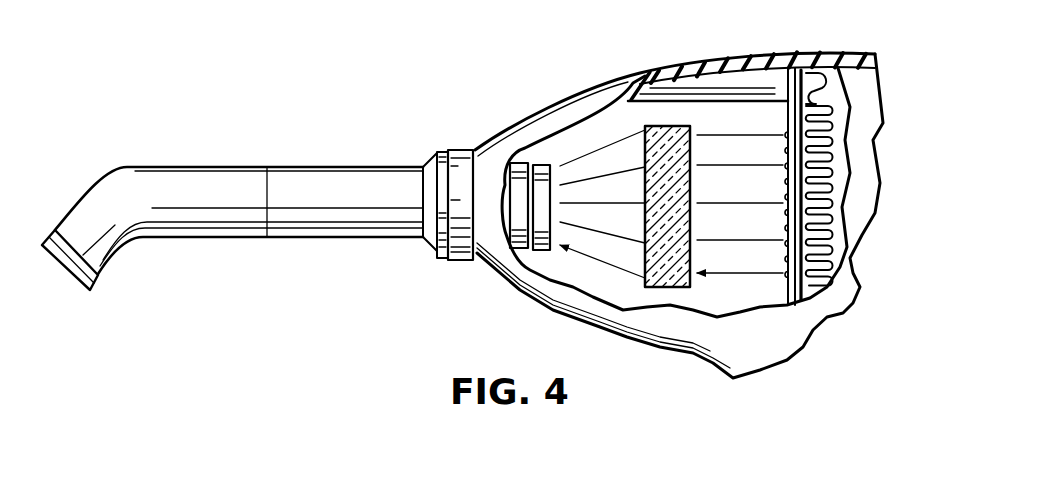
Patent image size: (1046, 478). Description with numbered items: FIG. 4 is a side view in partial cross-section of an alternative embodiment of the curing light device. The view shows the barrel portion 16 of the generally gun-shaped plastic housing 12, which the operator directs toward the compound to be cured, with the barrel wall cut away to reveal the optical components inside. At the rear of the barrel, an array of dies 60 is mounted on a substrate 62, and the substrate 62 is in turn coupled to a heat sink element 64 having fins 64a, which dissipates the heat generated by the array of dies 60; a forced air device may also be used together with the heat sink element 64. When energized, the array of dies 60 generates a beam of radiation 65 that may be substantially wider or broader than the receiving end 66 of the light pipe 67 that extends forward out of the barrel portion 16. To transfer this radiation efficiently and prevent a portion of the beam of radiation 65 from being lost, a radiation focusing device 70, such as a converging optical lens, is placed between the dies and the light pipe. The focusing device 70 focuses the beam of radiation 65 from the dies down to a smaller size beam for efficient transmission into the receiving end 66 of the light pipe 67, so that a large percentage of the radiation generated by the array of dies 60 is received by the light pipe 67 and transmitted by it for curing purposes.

The housing 12 is at (704, 362).
The barrel portion 16 is at (650, 70).
The array of dies 60 is at (783, 230).
The substrate 62 is at (790, 292).
The heat sink element 64 is at (873, 185).
The fins 64a is at (836, 182).
The beam of radiation 65 is at (755, 128).
The receiving end 66 is at (537, 163).
The light pipe 67 is at (298, 180).
The focusing device 70 is at (643, 135).